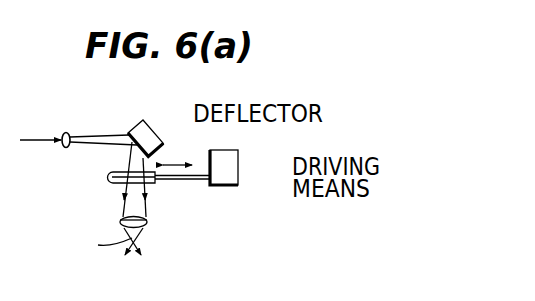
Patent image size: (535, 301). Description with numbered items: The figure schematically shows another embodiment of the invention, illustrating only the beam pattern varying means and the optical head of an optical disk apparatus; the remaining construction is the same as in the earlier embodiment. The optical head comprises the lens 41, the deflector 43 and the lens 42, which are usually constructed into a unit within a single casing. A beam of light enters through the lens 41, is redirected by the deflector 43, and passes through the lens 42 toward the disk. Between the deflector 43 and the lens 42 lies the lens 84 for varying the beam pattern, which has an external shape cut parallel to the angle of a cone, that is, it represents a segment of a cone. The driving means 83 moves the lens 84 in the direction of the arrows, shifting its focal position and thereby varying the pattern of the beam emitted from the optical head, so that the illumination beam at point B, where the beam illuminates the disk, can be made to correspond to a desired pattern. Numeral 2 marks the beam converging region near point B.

The lens 41 is at (67, 132).
The deflector 43 is at (152, 131).
The lens for varying the beam pattern 84 is at (108, 176).
The driving means 83 is at (238, 169).
The lens 42 is at (147, 219).
The optical disk surface 2 is at (107, 242).
The point B is at (142, 242).